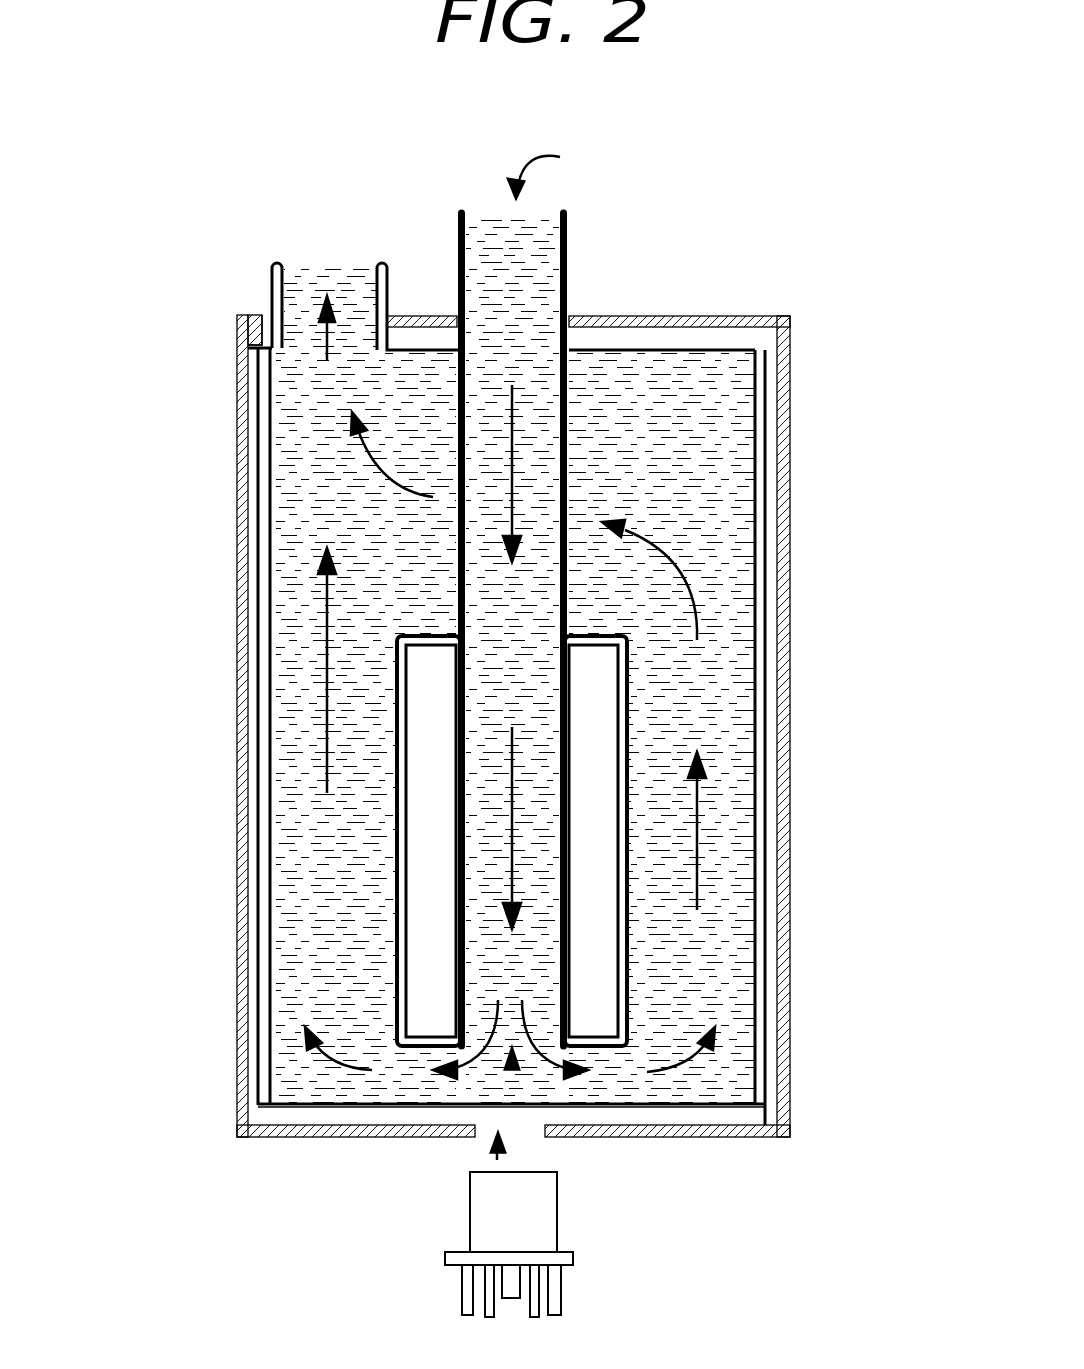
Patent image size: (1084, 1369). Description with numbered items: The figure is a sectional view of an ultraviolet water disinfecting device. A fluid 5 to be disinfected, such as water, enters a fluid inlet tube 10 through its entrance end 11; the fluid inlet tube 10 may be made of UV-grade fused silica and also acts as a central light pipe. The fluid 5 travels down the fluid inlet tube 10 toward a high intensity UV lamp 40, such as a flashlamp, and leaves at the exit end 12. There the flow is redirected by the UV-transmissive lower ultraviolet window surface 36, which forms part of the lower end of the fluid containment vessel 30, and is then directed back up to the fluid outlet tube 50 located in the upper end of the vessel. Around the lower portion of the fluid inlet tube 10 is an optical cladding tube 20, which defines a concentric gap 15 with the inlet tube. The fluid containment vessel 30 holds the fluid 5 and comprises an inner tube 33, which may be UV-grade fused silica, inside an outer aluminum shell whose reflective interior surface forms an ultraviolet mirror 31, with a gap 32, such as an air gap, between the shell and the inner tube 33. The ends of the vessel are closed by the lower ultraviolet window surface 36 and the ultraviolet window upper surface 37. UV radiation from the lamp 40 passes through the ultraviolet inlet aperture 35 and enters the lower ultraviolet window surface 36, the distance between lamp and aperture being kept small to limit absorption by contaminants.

The fluid 5 is at (492, 233).
The fluid inlet tube 10 is at (422, 340).
The entrance end 11 is at (564, 164).
The exit end 12 is at (512, 1068).
The concentric gap 15 is at (432, 840).
The optical cladding tube 20 is at (400, 932).
The fluid containment vessel 30 is at (496, 726).
The ultraviolet mirror 31 is at (243, 452).
The gap 32 is at (253, 497).
The inner tube 33 is at (265, 563).
The ultraviolet inlet aperture 35 is at (497, 1160).
The lower ultraviolet window surface 36 is at (272, 1117).
The ultraviolet window upper surface 37 is at (383, 280).
The high intensity UV lamp 40 is at (557, 1208).
The fluid outlet tube 50 is at (376, 272).